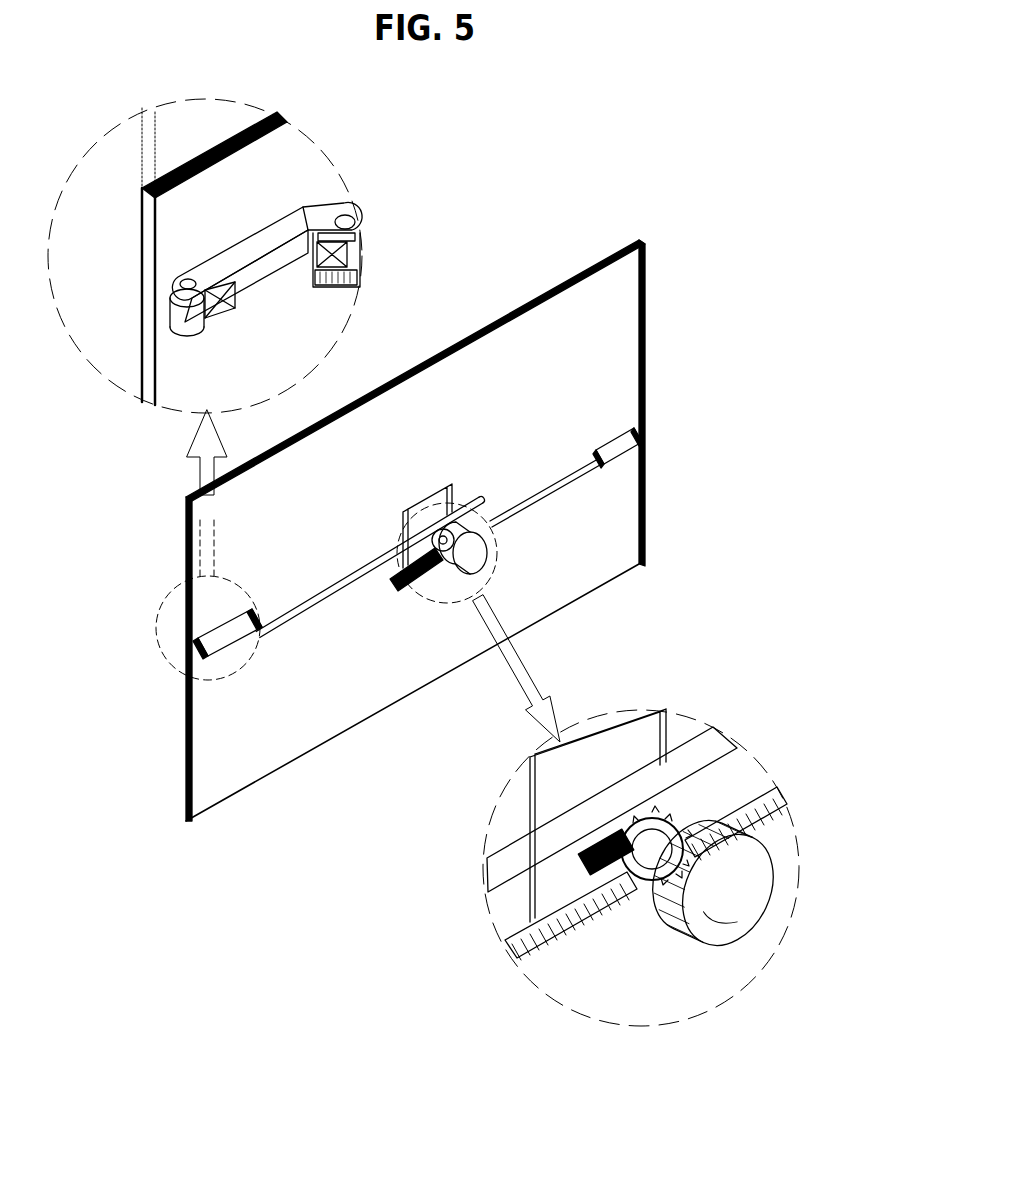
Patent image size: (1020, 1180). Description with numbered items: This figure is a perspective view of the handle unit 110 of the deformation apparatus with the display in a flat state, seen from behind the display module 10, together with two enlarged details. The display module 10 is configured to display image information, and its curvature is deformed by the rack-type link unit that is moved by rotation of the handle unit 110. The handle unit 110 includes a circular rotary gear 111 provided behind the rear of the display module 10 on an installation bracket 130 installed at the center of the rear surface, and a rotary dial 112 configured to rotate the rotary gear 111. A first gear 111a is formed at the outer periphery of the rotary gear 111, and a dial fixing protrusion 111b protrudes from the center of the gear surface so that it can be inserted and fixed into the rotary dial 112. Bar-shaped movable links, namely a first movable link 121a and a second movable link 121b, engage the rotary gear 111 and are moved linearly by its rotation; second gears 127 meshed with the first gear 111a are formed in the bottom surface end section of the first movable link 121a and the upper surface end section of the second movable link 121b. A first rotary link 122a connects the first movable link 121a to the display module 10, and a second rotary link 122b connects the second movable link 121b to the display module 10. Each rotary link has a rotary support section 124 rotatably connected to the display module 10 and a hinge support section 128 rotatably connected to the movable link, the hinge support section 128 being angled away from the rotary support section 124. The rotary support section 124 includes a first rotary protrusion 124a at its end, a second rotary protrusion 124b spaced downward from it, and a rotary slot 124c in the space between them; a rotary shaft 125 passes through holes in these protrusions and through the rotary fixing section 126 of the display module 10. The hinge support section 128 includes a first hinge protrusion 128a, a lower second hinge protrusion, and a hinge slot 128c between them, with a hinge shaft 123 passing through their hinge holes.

The display module 10 is at (140, 206).
The handle unit 110 is at (463, 490).
The rotary gear 111 is at (446, 563).
The first gear 111a is at (545, 896).
The dial fixing protrusion 111b is at (688, 824).
The rotary dial 112 is at (497, 556).
The first movable link 121a is at (324, 598).
The second movable link 121b is at (552, 480).
The first rotary link 122a is at (226, 626).
The second rotary link 122b is at (617, 424).
The hinge shaft 123 is at (348, 208).
The rotary support section 124 is at (202, 358).
The first rotary protrusion 124a is at (177, 340).
The second rotary protrusion 124b is at (216, 328).
The rotary slot 124c is at (237, 312).
The rotary shaft 125 is at (188, 278).
The rotary fixing section 126 is at (238, 222).
The second gear 127 is at (742, 752).
The hinge support section 128 is at (448, 293).
The first hinge protrusion 128a is at (360, 232).
The hinge slot 128c is at (355, 266).
The installation bracket 130 is at (592, 722).